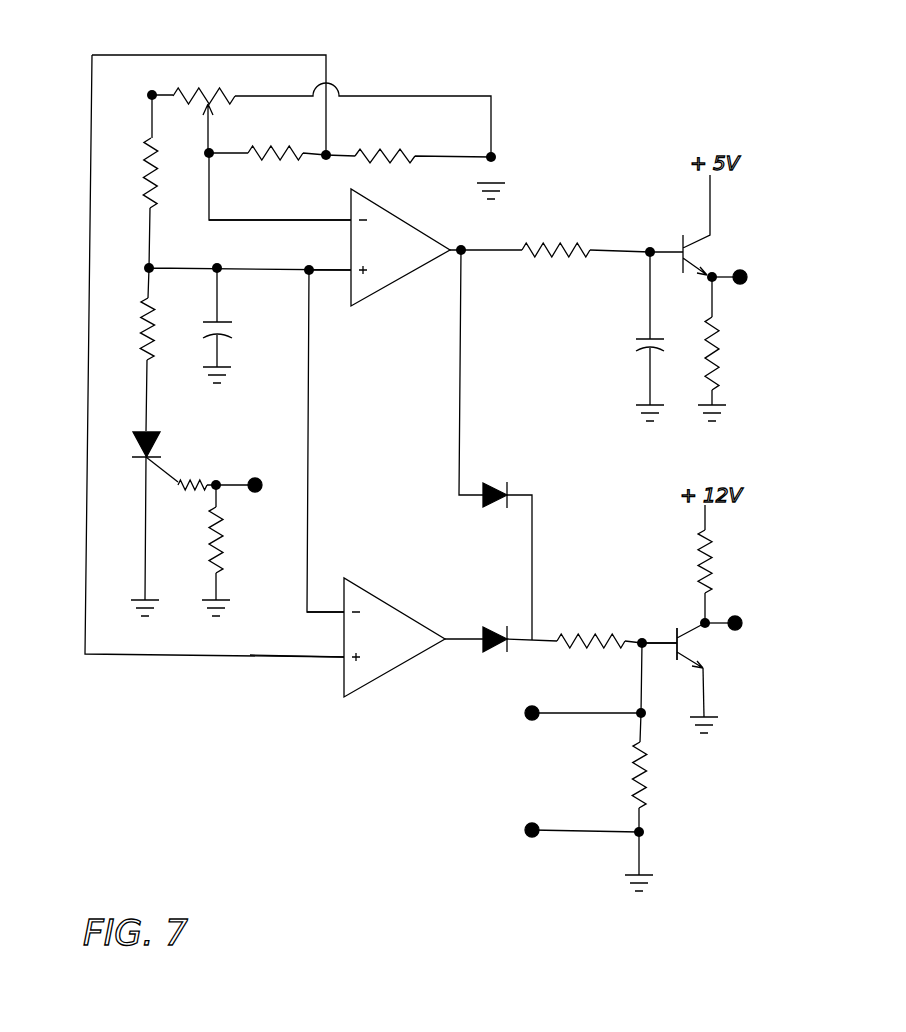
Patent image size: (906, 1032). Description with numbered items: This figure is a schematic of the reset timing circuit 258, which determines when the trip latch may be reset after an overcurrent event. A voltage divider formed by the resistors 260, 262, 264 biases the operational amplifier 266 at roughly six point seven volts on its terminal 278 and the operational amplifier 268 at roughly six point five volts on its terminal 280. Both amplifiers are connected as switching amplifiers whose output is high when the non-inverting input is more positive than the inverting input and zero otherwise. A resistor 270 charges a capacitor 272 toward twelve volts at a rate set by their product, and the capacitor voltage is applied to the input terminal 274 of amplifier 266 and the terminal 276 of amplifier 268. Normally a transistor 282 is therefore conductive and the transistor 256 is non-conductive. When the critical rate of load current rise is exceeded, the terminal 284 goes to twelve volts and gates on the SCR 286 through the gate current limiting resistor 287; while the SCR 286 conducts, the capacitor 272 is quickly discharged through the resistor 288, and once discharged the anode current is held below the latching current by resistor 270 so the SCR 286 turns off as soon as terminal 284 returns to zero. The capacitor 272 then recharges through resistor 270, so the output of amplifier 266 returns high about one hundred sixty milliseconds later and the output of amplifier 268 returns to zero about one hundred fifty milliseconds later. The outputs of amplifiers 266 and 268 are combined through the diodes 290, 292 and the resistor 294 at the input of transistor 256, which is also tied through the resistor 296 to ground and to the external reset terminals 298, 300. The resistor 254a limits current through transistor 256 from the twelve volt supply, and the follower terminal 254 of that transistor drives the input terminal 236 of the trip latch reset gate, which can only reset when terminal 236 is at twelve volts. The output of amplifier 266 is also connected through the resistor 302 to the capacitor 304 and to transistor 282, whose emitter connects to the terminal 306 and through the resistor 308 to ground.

The input terminal 236 is at (737, 615).
The follower terminal 254 is at (710, 627).
The resistor 254a is at (708, 547).
The transistor 256 is at (677, 640).
The reset timing circuit 258 is at (258, 760).
The resistor 260 is at (188, 88).
The resistor 262 is at (264, 150).
The resistor 264 is at (392, 153).
The operational amplifier 266 is at (418, 226).
The operational amplifier 268 is at (370, 590).
The resistor 270 is at (152, 172).
The capacitor 272 is at (228, 322).
The input terminal 274 is at (351, 268).
The terminal 276 is at (342, 615).
The terminal 278 is at (350, 220).
The terminal 280 is at (342, 660).
The transistor 282 is at (683, 243).
The terminal 284 is at (255, 478).
The SCR 286 is at (153, 430).
The gate current limiting resistor 287 is at (185, 490).
The resistor 288 is at (142, 332).
The diode 290 is at (495, 482).
The diode 292 is at (492, 627).
The resistor 294 is at (590, 637).
The resistor 296 is at (643, 790).
The external reset terminal 298 is at (523, 712).
The external reset terminal 300 is at (523, 827).
The resistor 302 is at (547, 257).
The capacitor 304 is at (643, 337).
The terminal 306 is at (745, 272).
The resistor 308 is at (717, 340).